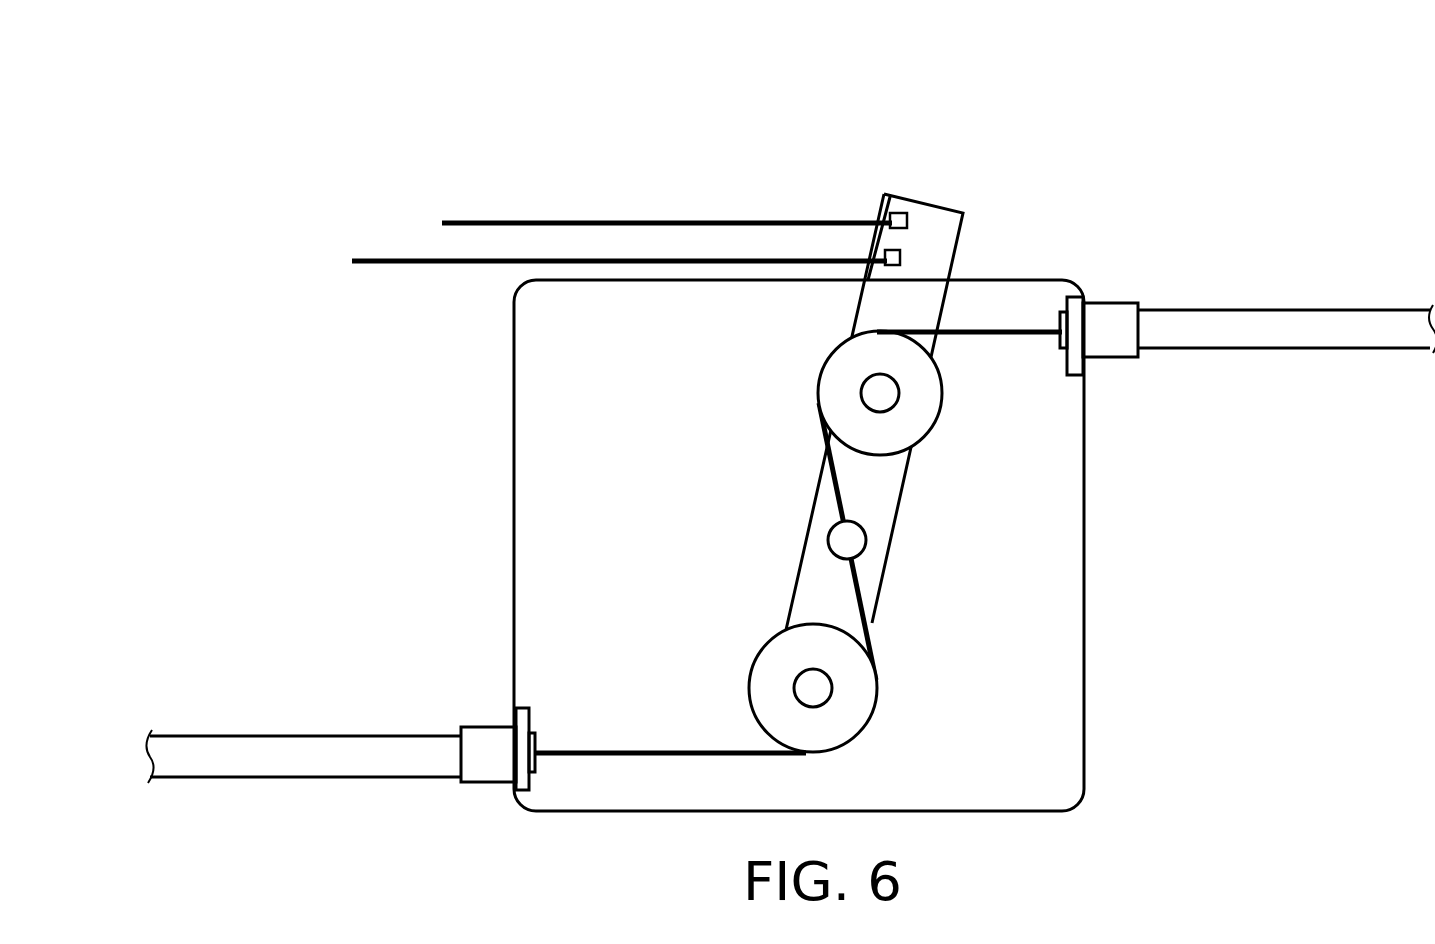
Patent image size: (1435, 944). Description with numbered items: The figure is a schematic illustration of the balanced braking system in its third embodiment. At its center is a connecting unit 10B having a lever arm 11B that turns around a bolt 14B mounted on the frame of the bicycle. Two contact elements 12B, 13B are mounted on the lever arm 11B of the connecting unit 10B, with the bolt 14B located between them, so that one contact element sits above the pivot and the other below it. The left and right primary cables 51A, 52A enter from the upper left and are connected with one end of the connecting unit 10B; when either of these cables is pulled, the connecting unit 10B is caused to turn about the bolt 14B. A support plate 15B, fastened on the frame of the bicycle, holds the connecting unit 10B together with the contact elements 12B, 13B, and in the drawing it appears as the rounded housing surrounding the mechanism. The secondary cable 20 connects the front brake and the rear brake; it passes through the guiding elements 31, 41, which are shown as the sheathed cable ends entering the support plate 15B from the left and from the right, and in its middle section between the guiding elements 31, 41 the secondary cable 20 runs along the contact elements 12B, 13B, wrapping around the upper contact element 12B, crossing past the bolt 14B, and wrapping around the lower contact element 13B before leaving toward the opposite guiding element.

The connecting unit 10B is at (899, 582).
The lever arm 11B is at (807, 580).
The contact element 12B is at (838, 375).
The contact element 13B is at (842, 707).
The bolt 14B is at (827, 540).
The support plate 15B is at (540, 438).
The secondary cable 20 is at (666, 750).
The guiding element 31 is at (312, 745).
The guiding element 41 is at (1165, 322).
The left primary cable 51A is at (597, 220).
The right primary cable 52A is at (627, 257).